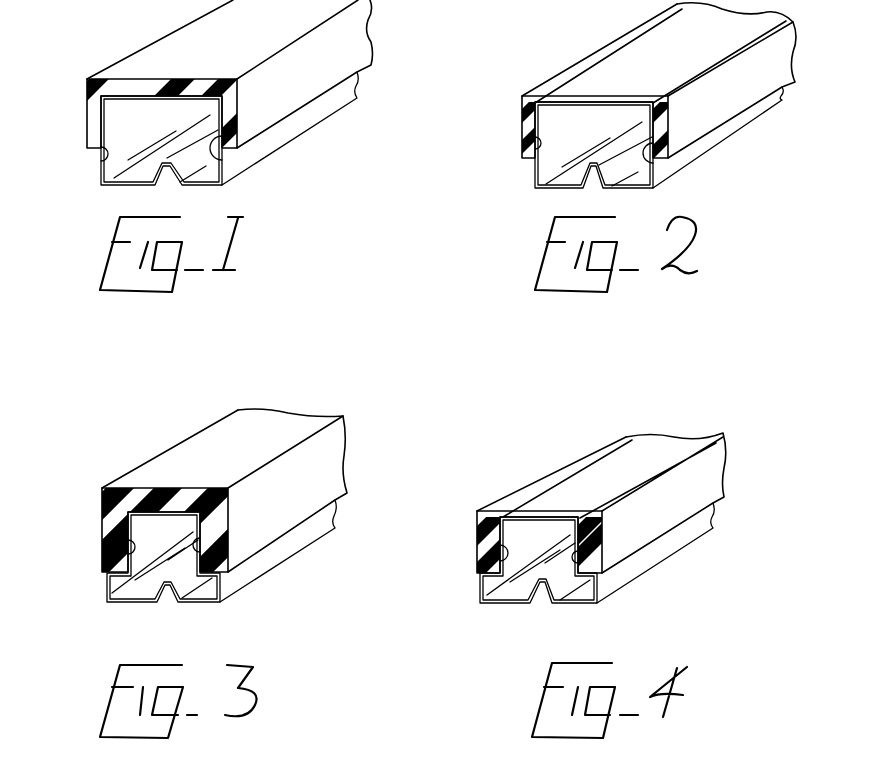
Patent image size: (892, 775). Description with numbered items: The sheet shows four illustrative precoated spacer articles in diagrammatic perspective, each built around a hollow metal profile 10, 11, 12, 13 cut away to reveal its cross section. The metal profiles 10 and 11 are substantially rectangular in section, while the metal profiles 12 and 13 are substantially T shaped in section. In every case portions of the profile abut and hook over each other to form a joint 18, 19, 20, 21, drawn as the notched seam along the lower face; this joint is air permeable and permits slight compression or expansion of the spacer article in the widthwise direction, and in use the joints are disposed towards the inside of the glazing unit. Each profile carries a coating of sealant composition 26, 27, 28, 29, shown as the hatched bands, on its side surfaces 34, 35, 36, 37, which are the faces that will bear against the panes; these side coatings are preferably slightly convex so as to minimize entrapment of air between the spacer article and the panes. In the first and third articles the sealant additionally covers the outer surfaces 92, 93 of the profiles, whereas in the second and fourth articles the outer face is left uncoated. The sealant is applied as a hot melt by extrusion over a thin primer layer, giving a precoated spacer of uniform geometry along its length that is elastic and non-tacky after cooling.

In FIG. 1, the hollow metal profile 10 is at (240, 160).
In FIG. 2, the hollow metal profile 11 is at (672, 162).
In FIG. 3, the hollow metal profile 12 is at (238, 573).
In FIG. 4, the hollow metal profile 13 is at (607, 582).
In FIG. 1, the joint 18 is at (160, 187).
In FIG. 2, the joint 19 is at (593, 177).
In FIG. 3, the joint 20 is at (163, 592).
In FIG. 4, the joint 21 is at (538, 595).
In FIG. 1, the coating of sealant composition 26 is at (95, 115).
In FIG. 2, the coating of sealant composition 27 is at (662, 128).
In FIG. 3, the coating of sealant composition 28 is at (220, 538).
In FIG. 4, the coating of sealant composition 29 is at (595, 548).
In FIG. 1, the side surface 34 is at (213, 135).
In FIG. 2, the side surface 35 is at (655, 163).
In FIG. 3, the side surface 36 is at (205, 548).
In FIG. 4, the side surface 37 is at (580, 557).
In FIG. 1, the outer surface 92 is at (157, 93).
In FIG. 3, the outer surface 93 is at (143, 510).